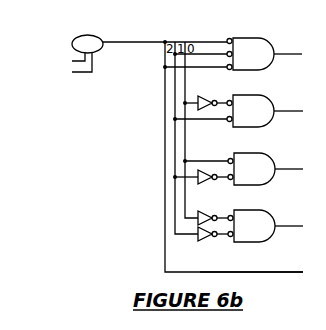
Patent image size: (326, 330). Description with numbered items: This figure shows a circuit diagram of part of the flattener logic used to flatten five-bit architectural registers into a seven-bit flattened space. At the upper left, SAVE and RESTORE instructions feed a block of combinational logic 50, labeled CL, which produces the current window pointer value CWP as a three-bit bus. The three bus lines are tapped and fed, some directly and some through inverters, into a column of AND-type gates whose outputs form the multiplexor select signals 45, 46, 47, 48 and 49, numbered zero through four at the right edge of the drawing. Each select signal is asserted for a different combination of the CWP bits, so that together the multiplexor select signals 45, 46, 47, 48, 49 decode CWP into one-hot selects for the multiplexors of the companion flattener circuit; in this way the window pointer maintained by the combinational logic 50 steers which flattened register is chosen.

The combinational logic 50 is at (72, 41).
The multiplexor select signal 45 is at (277, 51).
The multiplexor select signal 46 is at (278, 106).
The multiplexor select signal 47 is at (281, 157).
The multiplexor select signal 48 is at (287, 218).
The multiplexor select signal 49 is at (282, 267).